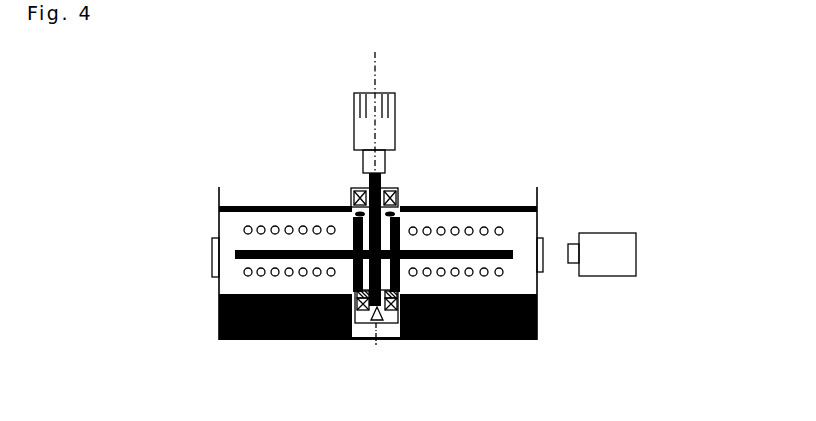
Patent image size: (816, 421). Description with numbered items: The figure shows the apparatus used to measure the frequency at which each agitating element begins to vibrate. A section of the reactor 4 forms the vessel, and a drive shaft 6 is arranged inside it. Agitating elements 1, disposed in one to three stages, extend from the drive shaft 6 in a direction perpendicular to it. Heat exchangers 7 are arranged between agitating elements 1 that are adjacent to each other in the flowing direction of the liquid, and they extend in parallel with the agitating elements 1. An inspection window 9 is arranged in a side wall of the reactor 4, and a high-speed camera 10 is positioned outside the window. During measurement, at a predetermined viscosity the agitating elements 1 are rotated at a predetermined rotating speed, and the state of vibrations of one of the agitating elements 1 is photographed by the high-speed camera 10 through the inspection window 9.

The agitating element 1 is at (290, 258).
The reactor 4 is at (543, 322).
The drive shaft 6 is at (405, 217).
The heat exchanger 7 is at (288, 224).
The inspection window 9 is at (547, 267).
The high-speed camera 10 is at (615, 232).